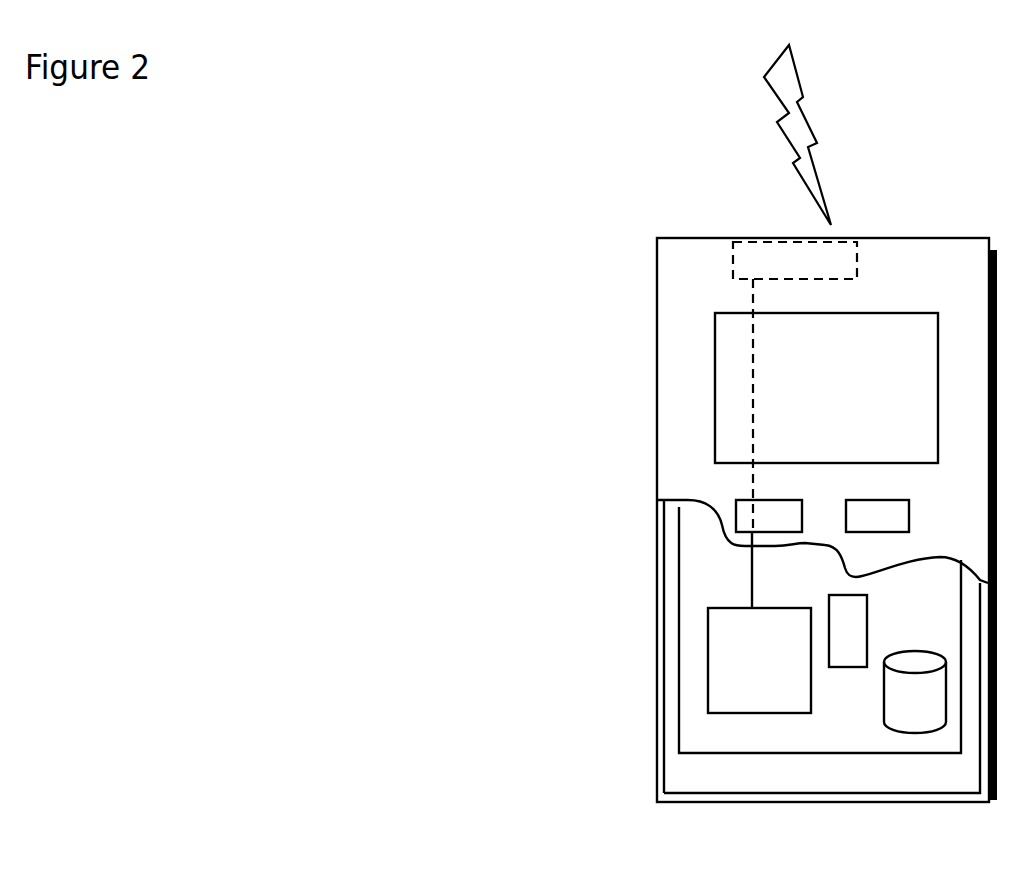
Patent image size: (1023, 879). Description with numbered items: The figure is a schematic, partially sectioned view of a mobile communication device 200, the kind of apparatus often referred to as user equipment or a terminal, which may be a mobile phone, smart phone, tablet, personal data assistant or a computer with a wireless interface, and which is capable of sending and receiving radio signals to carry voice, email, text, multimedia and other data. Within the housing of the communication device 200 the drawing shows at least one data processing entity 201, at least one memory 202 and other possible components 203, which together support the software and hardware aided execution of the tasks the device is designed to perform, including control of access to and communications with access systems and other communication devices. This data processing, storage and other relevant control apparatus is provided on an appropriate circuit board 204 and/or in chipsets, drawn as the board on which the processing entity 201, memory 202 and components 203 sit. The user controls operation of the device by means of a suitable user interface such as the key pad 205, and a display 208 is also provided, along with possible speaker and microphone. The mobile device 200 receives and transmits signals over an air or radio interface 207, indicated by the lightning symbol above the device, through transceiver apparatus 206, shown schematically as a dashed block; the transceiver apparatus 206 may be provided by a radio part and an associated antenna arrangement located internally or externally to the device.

The communication device 200 is at (657, 285).
The data processing entity 201 is at (714, 643).
The memory 202 is at (908, 705).
The other possible components 203 is at (848, 612).
The circuit board 204 is at (707, 735).
The key pad 205 is at (740, 518).
The transceiver apparatus 206 is at (845, 255).
The radio interface 207 is at (831, 161).
The display 208 is at (733, 375).